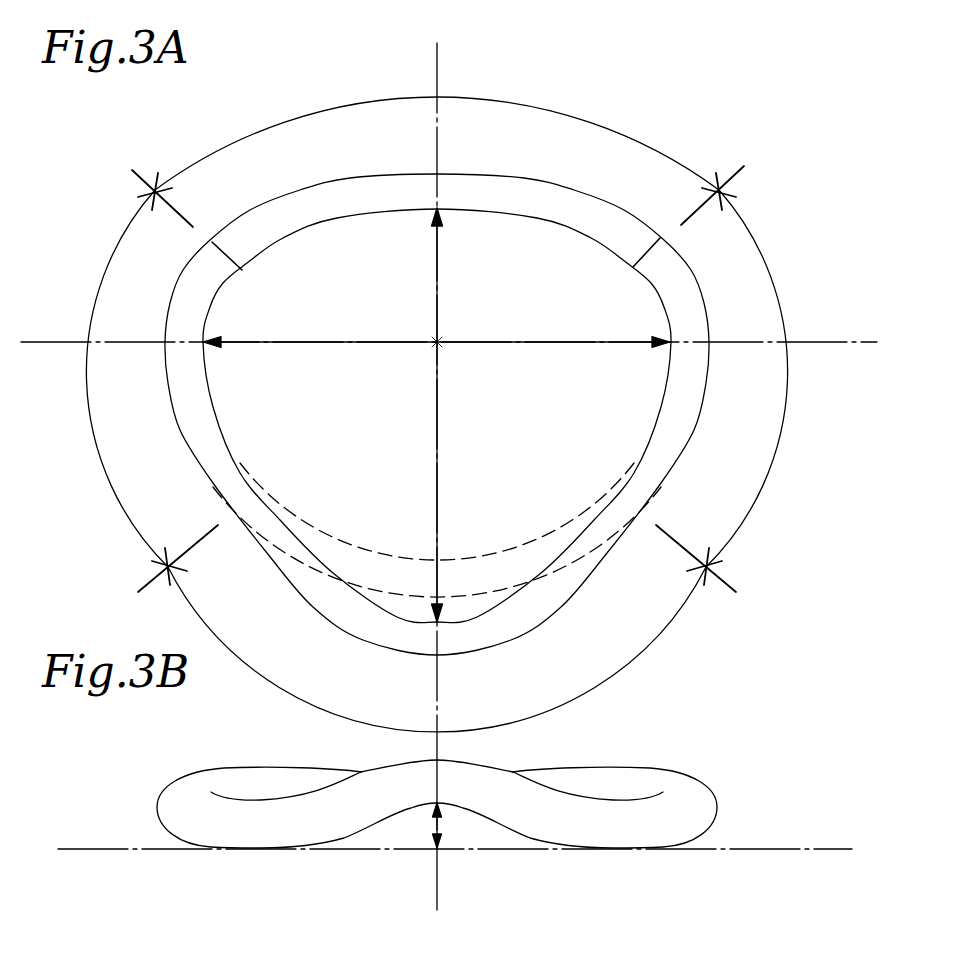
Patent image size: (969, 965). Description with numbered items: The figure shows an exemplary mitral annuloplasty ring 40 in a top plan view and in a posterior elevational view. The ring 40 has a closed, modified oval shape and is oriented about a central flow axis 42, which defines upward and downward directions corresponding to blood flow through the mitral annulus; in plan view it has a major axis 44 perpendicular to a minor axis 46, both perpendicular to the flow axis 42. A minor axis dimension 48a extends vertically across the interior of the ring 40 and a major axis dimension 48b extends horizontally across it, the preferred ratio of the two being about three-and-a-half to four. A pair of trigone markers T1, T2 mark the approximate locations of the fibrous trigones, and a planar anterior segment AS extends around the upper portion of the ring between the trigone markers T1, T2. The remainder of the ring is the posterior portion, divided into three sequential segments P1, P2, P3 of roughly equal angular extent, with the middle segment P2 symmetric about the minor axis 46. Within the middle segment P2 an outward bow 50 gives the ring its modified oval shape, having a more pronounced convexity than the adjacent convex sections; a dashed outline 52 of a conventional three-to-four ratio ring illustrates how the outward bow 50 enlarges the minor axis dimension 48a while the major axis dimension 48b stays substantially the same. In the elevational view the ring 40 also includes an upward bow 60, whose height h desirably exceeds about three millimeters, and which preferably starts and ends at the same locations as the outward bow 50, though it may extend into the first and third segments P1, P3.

In FIG. 3A, the mitral annuloplasty ring 40 is at (280, 185).
In FIG. 3B, the mitral annuloplasty ring 40 is at (163, 752).
In FIG. 3A, the central flow axis 42 is at (441, 347).
In FIG. 3B, the central flow axis 42 is at (437, 886).
In FIG. 3A, the major axis 44 is at (847, 341).
In FIG. 3A, the minor axis 46 is at (437, 72).
In FIG. 3A, the minor axis dimension 48a is at (440, 466).
In FIG. 3A, the major axis dimension 48b is at (313, 341).
In FIG. 3A, the outward bow 50 is at (343, 629).
In FIG. 3A, the dashed outline 52 is at (337, 537).
In FIG. 3B, the upward bow 60 is at (490, 763).
In FIG. 3A, the anterior segment AS is at (558, 107).
In FIG. 3A, the first posterior segment P1 is at (124, 499).
In FIG. 3A, the middle posterior segment P2 is at (641, 653).
In FIG. 3A, the third posterior segment P3 is at (777, 441).
In FIG. 3A, the first trigone marker T1 is at (231, 252).
In FIG. 3A, the second trigone marker T2 is at (640, 253).
In FIG. 3B, the height of the upward bow h is at (417, 831).